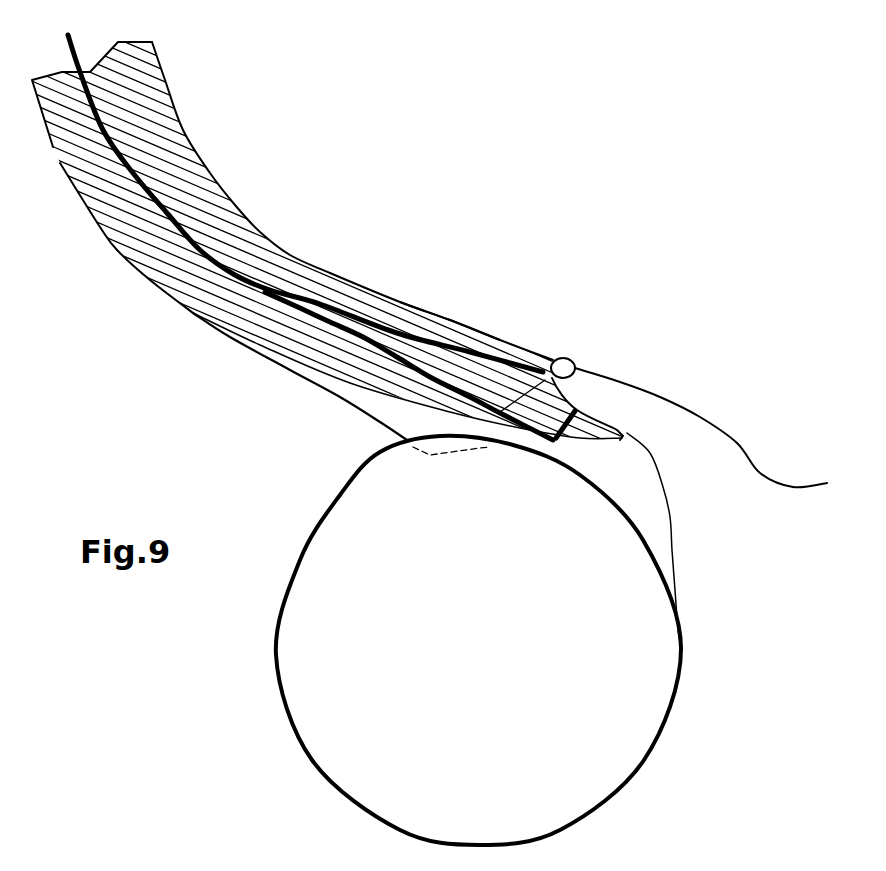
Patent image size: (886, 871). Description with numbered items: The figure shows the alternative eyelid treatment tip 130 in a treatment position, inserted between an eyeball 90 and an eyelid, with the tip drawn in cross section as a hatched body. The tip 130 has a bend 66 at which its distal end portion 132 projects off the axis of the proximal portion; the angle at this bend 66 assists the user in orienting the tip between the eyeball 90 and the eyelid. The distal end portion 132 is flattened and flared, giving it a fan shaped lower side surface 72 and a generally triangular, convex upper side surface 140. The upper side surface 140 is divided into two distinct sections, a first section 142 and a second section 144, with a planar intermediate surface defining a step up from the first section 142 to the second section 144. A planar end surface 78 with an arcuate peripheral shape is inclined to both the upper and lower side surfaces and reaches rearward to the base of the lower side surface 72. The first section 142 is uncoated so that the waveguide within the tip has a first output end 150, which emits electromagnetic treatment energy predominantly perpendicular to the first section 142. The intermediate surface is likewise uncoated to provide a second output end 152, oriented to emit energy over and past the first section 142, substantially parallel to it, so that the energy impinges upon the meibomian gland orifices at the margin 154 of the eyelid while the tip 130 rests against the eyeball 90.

The tip 130 is at (165, 67).
The upper side surface 140 is at (397, 298).
The second section 144 is at (444, 320).
The second output end 152 is at (577, 360).
The first output end 150 is at (597, 418).
The first section 142 is at (615, 424).
The bend 66 is at (192, 313).
The distal end portion 132 is at (350, 387).
The lower side surface 72 is at (437, 412).
The margin 154 is at (547, 373).
The end surface 78 is at (580, 441).
The eyeball 90 is at (275, 630).